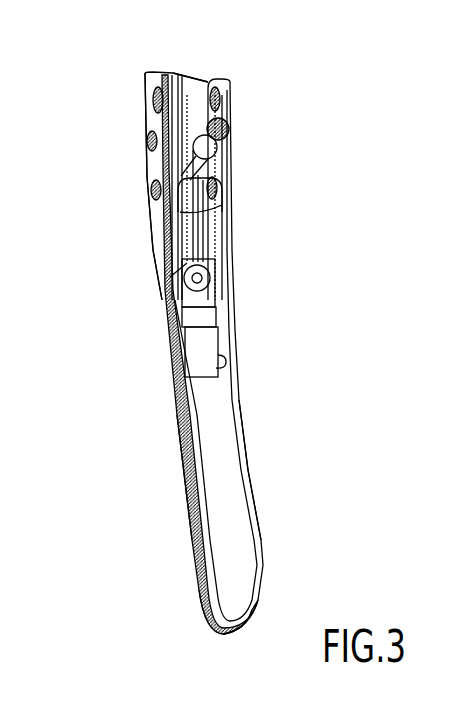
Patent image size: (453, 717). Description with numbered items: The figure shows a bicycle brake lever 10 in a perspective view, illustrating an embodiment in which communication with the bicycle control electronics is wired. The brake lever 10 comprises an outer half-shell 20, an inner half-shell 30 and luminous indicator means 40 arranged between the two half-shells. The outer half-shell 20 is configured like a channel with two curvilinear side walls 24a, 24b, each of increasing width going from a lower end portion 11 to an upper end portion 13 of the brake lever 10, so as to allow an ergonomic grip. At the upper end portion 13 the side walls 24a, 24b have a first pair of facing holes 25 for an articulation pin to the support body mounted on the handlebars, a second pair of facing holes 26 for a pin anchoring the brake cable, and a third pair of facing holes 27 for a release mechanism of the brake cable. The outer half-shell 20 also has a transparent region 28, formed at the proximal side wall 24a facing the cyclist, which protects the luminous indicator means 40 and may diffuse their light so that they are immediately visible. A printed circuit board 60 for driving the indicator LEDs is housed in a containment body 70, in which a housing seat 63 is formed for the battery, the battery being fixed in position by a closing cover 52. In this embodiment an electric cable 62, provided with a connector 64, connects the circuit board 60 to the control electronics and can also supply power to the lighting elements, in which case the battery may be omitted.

The brake lever 10 is at (122, 486).
The lower end portion 11 is at (274, 594).
The upper end portion 13 is at (128, 55).
The outer half-shell 20 is at (146, 235).
The proximal side wall 24a is at (144, 100).
The side wall 24b is at (233, 230).
The first pair of facing holes 25 is at (154, 188).
The second pair of facing holes 26 is at (175, 73).
The third pair of facing holes 27 is at (147, 135).
The transparent region 28 is at (146, 295).
The inner half-shell 30 is at (268, 454).
The luminous indicator means 40 is at (160, 410).
The closing cover 52 is at (220, 275).
The printed circuit board 60 is at (218, 358).
The electric cable 62 is at (218, 198).
The housing seat 63 is at (215, 318).
The connector 64 is at (230, 133).
The containment body 70 is at (172, 354).